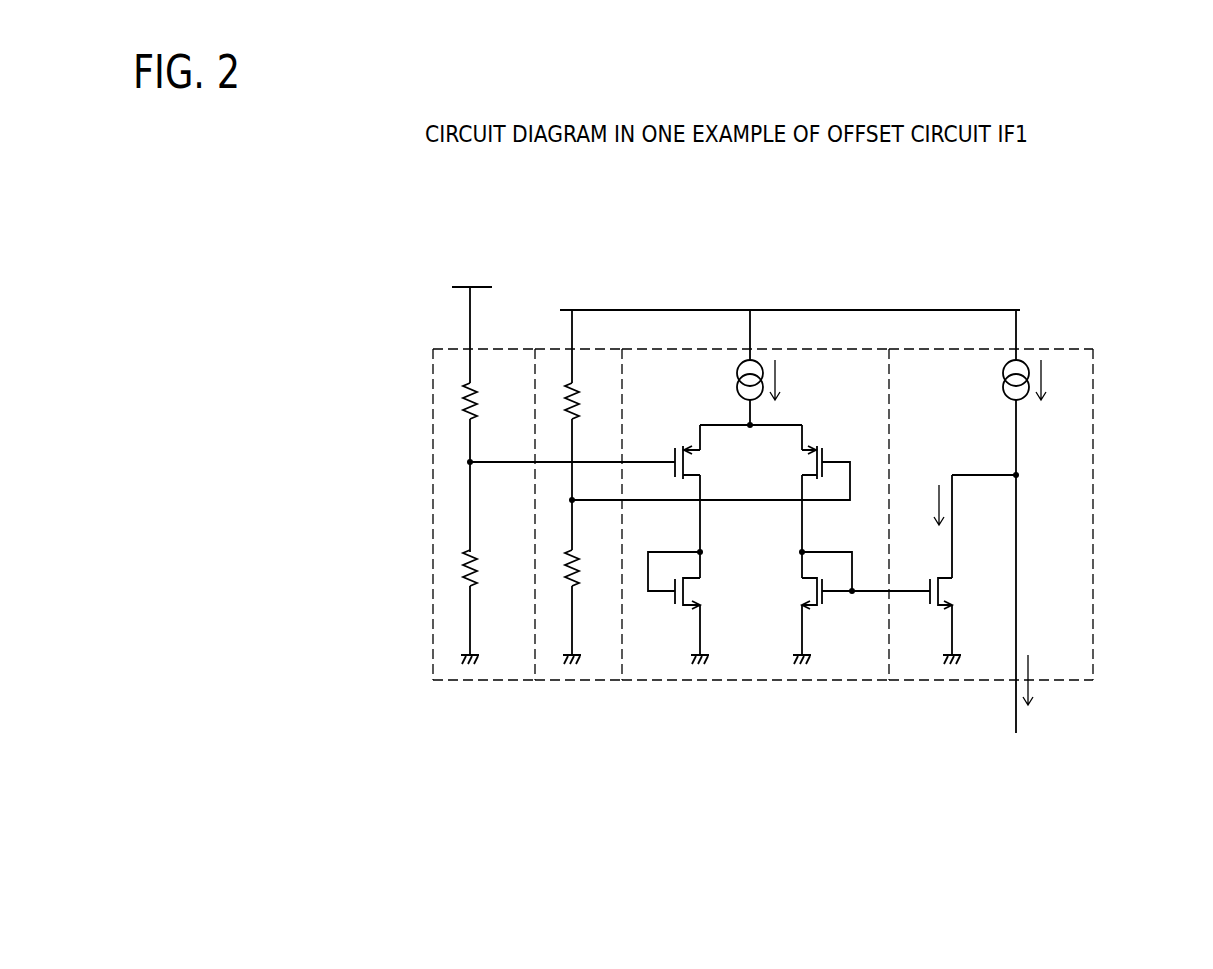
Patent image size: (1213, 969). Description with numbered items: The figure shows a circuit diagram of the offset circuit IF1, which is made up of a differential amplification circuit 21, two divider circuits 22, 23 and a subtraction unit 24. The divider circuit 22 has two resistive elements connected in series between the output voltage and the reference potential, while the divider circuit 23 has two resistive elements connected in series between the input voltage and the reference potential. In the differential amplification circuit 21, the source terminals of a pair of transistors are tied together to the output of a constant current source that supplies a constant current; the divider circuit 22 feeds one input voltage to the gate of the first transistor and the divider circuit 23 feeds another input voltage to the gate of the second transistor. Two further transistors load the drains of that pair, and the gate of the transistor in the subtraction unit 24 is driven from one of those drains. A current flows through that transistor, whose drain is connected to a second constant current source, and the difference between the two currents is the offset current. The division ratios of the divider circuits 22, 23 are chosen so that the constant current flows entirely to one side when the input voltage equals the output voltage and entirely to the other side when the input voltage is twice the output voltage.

The offset circuit IF1 is at (1097, 244).
The differential amplification circuit 21 is at (748, 683).
The divider circuit 22 is at (458, 683).
The divider circuit 23 is at (552, 683).
The subtraction unit 24 is at (915, 683).